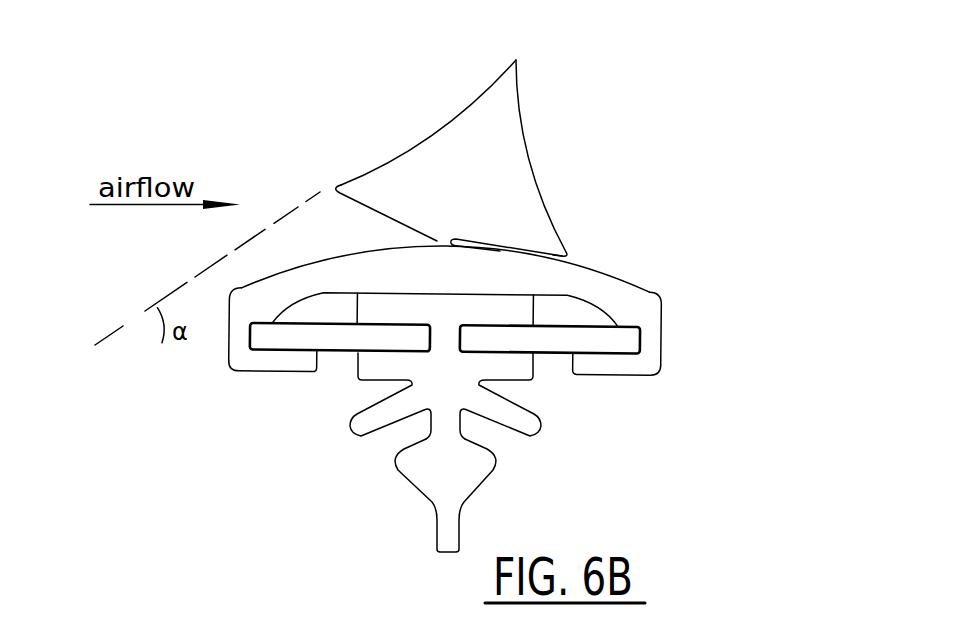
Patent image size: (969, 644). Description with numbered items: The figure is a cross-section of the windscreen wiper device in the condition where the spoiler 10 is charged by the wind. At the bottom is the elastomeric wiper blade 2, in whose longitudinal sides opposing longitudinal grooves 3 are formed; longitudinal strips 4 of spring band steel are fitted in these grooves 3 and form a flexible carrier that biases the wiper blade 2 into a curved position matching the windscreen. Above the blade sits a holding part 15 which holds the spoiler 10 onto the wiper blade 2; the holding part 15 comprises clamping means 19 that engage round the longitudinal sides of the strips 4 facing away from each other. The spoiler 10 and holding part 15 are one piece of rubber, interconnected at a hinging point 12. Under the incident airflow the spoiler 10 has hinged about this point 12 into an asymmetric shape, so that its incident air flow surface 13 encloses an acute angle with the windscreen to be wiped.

The wiper blade 2 is at (520, 415).
The longitudinal grooves 3 is at (430, 337).
The longitudinal strips 4 is at (328, 342).
The spoiler 10 is at (510, 140).
The hinging point 12 is at (445, 242).
The incident air flow surface 13 is at (443, 108).
The holding part 15 is at (625, 292).
The clamping means 19 is at (243, 367).